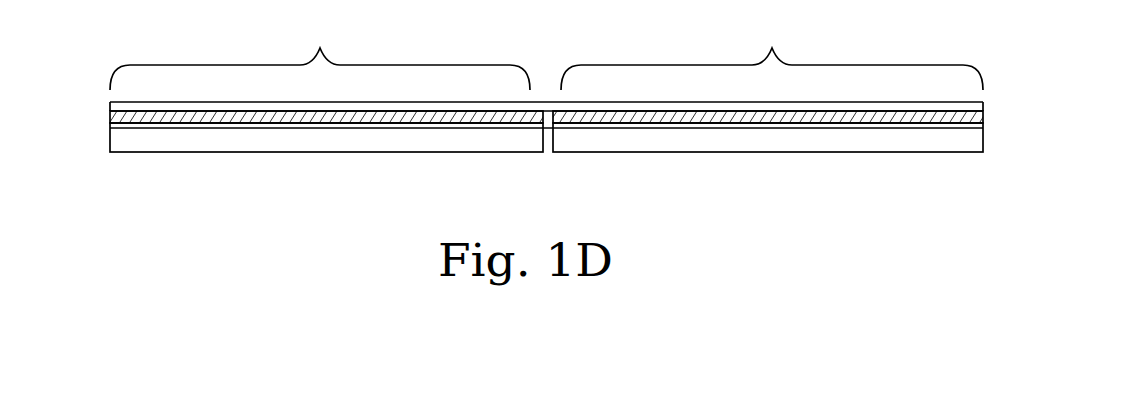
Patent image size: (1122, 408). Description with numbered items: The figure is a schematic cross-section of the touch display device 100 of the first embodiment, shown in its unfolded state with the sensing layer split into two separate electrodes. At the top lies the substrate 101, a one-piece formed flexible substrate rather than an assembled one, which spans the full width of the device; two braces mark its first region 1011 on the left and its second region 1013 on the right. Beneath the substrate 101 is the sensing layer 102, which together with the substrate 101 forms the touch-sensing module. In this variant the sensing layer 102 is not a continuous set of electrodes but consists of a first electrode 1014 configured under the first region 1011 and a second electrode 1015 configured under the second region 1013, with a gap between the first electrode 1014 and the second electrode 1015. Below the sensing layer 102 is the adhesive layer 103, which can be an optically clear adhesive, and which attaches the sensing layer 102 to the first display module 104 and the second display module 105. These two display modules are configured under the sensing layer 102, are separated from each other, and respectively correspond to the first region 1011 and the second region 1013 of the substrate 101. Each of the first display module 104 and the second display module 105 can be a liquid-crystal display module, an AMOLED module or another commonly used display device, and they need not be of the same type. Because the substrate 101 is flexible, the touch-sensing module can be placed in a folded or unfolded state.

The touch display device 100 is at (1048, 245).
The substrate 101 is at (590, 61).
The first region 1011 is at (320, 50).
The second region 1013 is at (772, 50).
The sensing layer 102 is at (579, 155).
The first electrode 1014 is at (172, 117).
The second electrode 1015 is at (907, 117).
The adhesive layer 103 is at (607, 179).
The first display module 104 is at (297, 138).
The second display module 105 is at (748, 140).